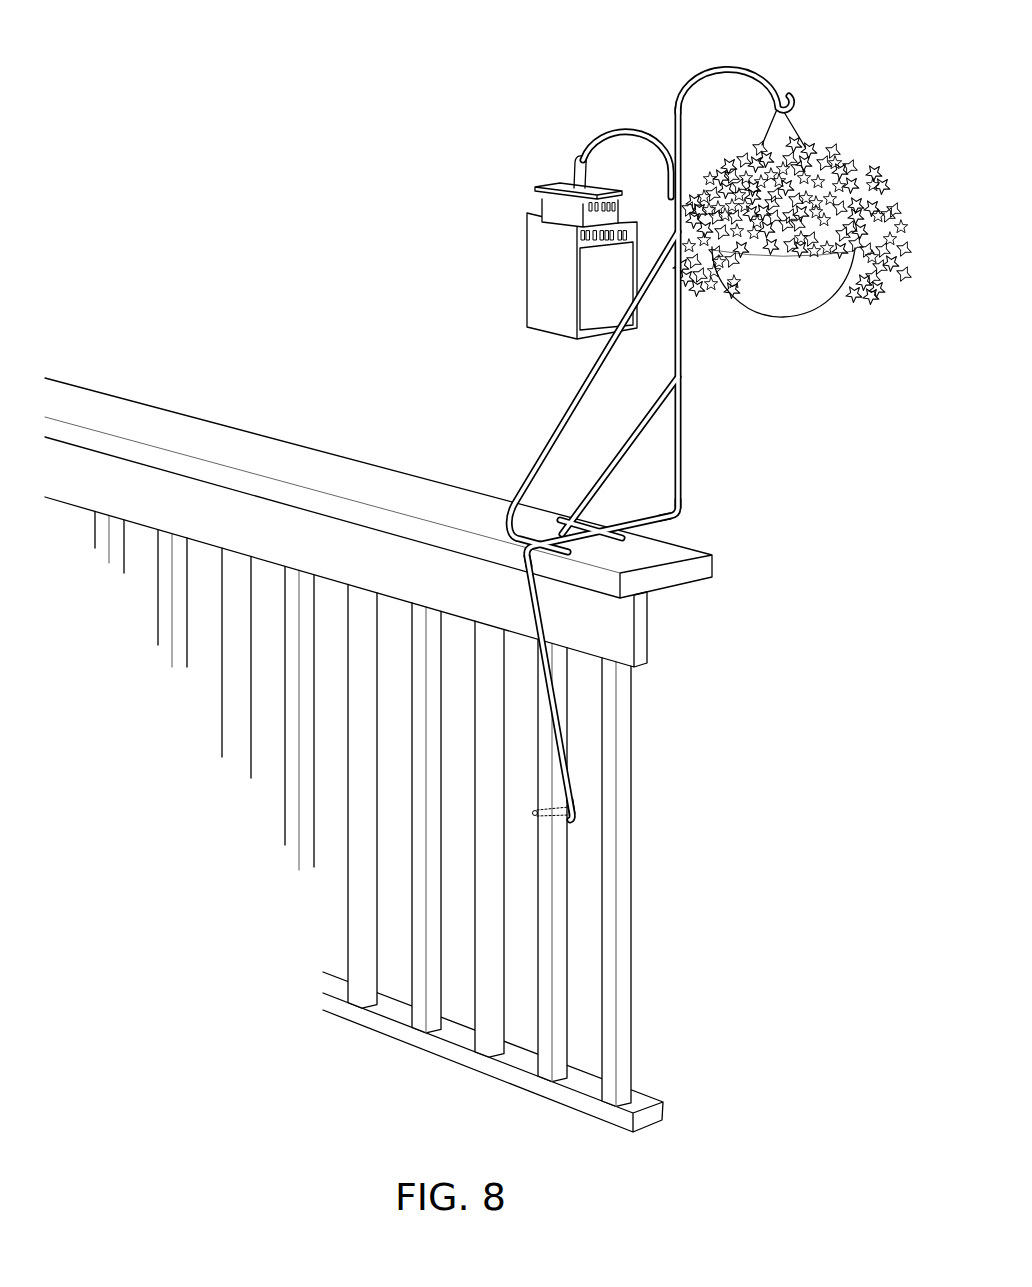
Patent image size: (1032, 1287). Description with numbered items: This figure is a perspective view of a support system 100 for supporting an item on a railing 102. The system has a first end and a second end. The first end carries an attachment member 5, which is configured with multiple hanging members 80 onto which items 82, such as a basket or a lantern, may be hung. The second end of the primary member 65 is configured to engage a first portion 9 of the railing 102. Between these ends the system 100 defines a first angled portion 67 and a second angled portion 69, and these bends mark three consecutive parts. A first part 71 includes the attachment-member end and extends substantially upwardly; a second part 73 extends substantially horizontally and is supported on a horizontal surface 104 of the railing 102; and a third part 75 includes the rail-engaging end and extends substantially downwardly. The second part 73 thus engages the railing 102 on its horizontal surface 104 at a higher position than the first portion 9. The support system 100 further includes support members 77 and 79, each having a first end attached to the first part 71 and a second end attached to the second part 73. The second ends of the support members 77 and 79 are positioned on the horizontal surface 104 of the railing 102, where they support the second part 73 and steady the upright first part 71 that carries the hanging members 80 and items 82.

The attachment member 5 is at (570, 133).
The first portion of railing 9 is at (681, 720).
The primary member 65 is at (573, 817).
The first angled portion 67 is at (684, 514).
The second angled portion 69 is at (528, 547).
The first part 71 is at (682, 403).
The second part 73 is at (660, 512).
The third part 75 is at (547, 675).
The support member 77 is at (552, 446).
The support member 79 is at (650, 417).
The hanging member 80 is at (638, 124).
The item 82 is at (681, 222).
The support system 100 is at (481, 477).
The railing 102 is at (713, 554).
The horizontal surface 104 is at (666, 566).